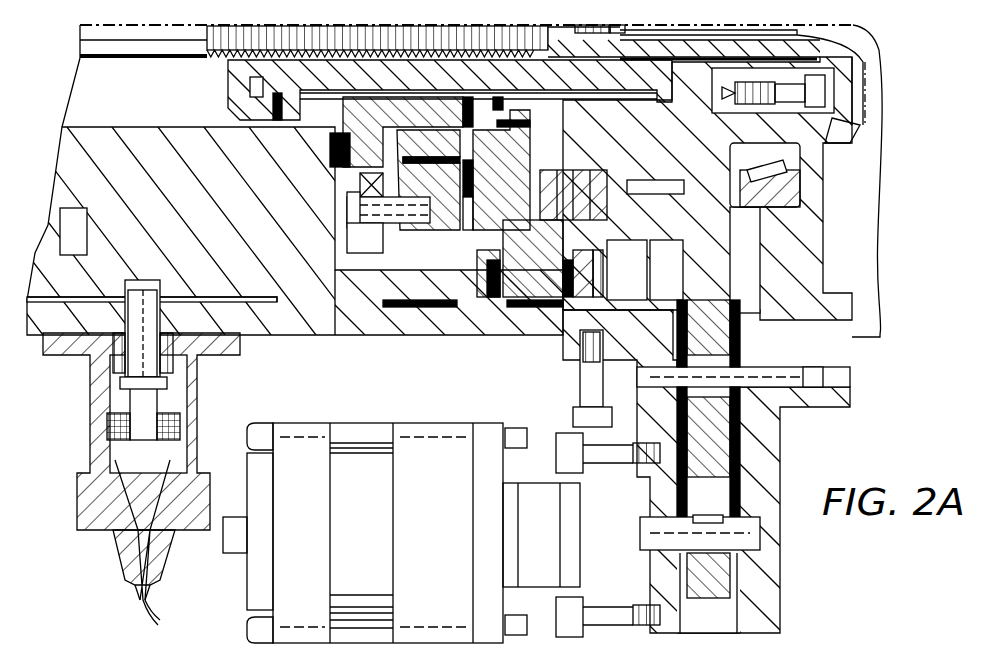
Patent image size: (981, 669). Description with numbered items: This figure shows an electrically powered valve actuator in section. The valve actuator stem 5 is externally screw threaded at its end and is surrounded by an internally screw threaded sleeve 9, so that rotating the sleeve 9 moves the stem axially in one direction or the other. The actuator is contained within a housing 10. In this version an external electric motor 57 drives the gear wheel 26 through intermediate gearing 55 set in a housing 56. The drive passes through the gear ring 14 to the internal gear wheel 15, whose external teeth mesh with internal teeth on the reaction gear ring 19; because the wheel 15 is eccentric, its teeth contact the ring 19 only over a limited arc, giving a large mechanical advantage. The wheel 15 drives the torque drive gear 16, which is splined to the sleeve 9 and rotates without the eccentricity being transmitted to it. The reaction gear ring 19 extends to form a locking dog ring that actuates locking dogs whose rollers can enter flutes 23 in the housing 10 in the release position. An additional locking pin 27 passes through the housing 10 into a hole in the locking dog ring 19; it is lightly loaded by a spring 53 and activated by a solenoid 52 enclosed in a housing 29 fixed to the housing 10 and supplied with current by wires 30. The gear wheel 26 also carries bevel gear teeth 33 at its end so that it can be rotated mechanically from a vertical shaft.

The valve actuator stem 5 is at (118, 45).
The internally screw threaded sleeve 9 is at (270, 68).
The torque drive gear 16 is at (250, 150).
The flutes 23 is at (250, 300).
The gear wheel 26 is at (640, 160).
The bevel gear teeth 33 is at (838, 150).
The internal gear wheel 15 is at (420, 235).
The reaction gear ring 19 is at (415, 285).
The housing 10 is at (448, 325).
The gear ring 14 is at (530, 275).
The housing 29 is at (95, 427).
The locking pin 27 is at (133, 337).
The spring 53 is at (176, 358).
The solenoid 52 is at (162, 430).
The wires 30 is at (140, 598).
The external electric motor 57 is at (441, 533).
The housing 56 is at (730, 622).
The intermediate gearing 55 is at (710, 442).